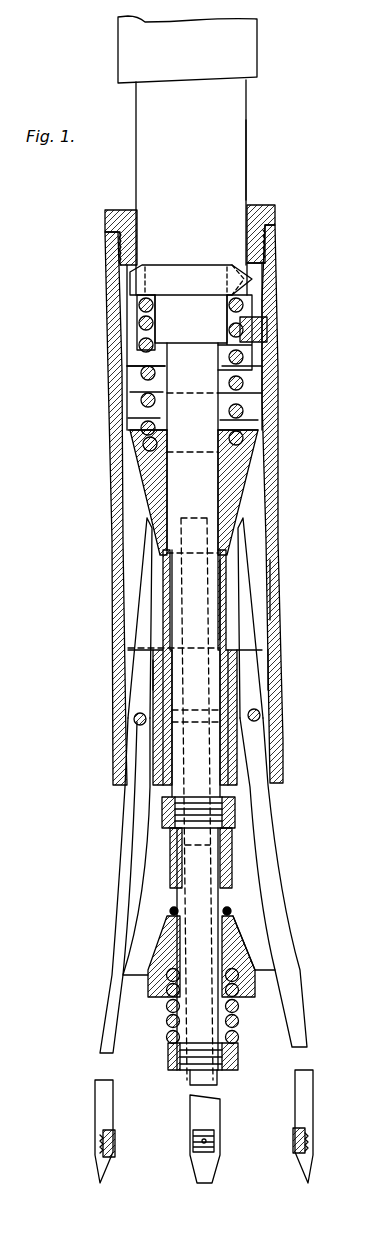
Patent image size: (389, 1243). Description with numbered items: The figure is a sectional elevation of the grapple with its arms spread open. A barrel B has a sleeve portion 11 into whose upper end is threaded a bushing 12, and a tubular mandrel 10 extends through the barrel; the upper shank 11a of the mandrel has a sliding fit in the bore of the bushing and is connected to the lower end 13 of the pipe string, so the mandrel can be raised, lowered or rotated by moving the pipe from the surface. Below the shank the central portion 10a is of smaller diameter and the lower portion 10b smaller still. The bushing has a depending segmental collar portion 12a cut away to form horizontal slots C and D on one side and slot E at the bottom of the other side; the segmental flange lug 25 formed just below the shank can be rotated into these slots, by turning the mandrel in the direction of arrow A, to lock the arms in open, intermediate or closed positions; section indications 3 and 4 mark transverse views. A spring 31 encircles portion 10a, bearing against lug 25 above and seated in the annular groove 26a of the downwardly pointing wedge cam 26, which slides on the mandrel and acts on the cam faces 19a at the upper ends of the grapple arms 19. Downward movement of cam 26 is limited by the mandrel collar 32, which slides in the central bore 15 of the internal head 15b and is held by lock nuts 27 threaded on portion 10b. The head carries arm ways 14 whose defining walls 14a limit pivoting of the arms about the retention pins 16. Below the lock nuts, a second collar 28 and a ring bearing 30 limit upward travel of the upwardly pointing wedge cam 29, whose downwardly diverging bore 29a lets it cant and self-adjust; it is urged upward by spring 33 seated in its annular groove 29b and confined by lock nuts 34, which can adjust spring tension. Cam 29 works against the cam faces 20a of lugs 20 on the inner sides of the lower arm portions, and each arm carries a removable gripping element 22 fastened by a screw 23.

The lower end of pipe string 13 is at (187, 49).
The upper shank of the mandrel 11a is at (191, 211).
The arrow indicating direction of mandrel rotation A is at (232, 160).
The barrel B is at (272, 585).
The slot C is at (258, 291).
The slot D is at (262, 331).
The slot E is at (130, 375).
The section line 3- 3 is at (83, 297).
The section line 4- 4 is at (83, 725).
The sleeve portion of barrel 11 is at (274, 455).
The bushing 12 is at (277, 212).
The segmental collar portion of bushing 12a is at (137, 212).
The segmental flange lug 25 is at (191, 280).
The spring 31 is at (241, 383).
The downwardly pointing wedge cam 26 is at (241, 479).
The annular groove 26a is at (238, 426).
The tubular mandrel 10 is at (174, 714).
The central portion of the mandrel 10a is at (172, 591).
The lower portion of the mandrel 10b is at (190, 853).
The mandrel collar 32 is at (223, 620).
The cam faces 19a is at (147, 523).
The central bore 15 is at (236, 745).
The internal head 15b is at (153, 673).
The arm ways 14 is at (128, 657).
The defining walls of the armways 14a is at (278, 672).
The retention pins 16 is at (258, 711).
The lock nuts 27 is at (238, 806).
The second collar 28 is at (233, 868).
The ring bearing 30 is at (171, 911).
The upwardly pointing wedge cam 29 is at (168, 930).
The downwardly diverging bore 29a is at (250, 958).
The annular groove 29b is at (276, 973).
The lugs 20 is at (138, 961).
The cam faces 20a is at (262, 970).
The spring 33 is at (240, 1018).
The lock nuts 34 is at (241, 1057).
The grapple arms 19 is at (133, 823).
The gripping element 22 is at (115, 1148).
The screw 23 is at (195, 1145).